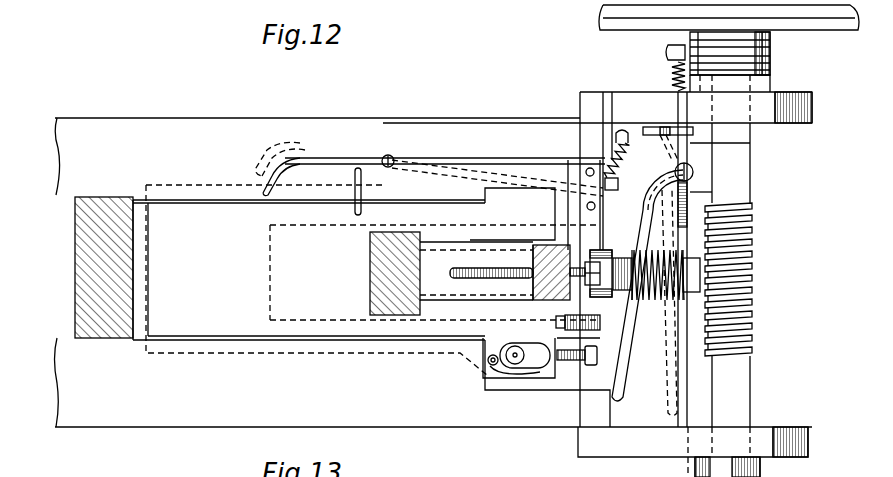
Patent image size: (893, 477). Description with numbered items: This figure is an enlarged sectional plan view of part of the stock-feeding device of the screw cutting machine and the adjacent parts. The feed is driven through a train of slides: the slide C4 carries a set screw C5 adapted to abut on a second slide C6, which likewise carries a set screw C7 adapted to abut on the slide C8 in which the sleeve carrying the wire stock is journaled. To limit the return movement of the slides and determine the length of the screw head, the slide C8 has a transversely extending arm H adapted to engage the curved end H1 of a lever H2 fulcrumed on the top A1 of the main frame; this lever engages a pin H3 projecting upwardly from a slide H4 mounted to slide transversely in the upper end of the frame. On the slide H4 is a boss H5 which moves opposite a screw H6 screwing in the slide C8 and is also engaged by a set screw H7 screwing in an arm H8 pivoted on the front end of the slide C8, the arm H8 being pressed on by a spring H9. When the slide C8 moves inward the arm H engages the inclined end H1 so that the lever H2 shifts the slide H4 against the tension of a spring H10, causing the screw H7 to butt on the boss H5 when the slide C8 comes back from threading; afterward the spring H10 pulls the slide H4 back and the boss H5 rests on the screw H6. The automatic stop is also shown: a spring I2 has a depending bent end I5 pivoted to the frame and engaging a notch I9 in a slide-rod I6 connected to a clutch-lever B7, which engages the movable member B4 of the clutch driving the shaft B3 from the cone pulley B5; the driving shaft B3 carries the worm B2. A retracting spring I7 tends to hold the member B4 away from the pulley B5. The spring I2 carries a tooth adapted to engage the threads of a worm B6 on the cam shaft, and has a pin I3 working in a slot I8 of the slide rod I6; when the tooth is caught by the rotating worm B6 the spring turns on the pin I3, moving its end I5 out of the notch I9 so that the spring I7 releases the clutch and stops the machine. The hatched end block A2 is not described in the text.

The top of the main frame A1 is at (434, 274).
The frame end block A2 is at (90, 267).
The worm B2 is at (752, 318).
The driving shaft B3 is at (750, 390).
The clutch B4 is at (752, 48).
The cone pulley B5 is at (612, 12).
The screw or worm B6 is at (656, 303).
The clutch-lever B7 is at (700, 48).
The slide C4 is at (588, 250).
The set screw C5 is at (618, 302).
The second slide C6 is at (505, 273).
The set screw C7 is at (503, 270).
The slide C8 is at (379, 280).
The transversely-extending arm H is at (297, 177).
The curved end of lever H1 is at (280, 165).
The lever H2 is at (424, 152).
The pin H3 is at (586, 173).
The slide H4 is at (587, 208).
The boss H5 is at (578, 343).
The screw H6 is at (556, 323).
The set screw H7 is at (576, 362).
The arm H8 is at (555, 375).
The spring H9 is at (520, 378).
The spring H10 is at (629, 160).
The spring I2 is at (622, 378).
The pin I3 is at (693, 173).
The depending bent end of spring I5 is at (672, 127).
The slide-rod I6 is at (673, 417).
The retracting spring I7 is at (672, 78).
The slot I8 is at (712, 192).
The notch I9 is at (750, 143).